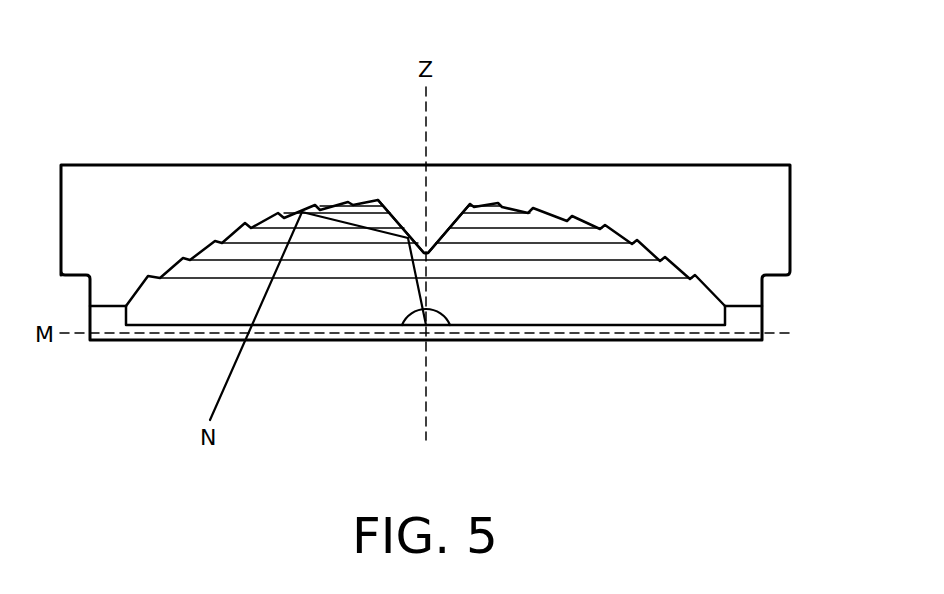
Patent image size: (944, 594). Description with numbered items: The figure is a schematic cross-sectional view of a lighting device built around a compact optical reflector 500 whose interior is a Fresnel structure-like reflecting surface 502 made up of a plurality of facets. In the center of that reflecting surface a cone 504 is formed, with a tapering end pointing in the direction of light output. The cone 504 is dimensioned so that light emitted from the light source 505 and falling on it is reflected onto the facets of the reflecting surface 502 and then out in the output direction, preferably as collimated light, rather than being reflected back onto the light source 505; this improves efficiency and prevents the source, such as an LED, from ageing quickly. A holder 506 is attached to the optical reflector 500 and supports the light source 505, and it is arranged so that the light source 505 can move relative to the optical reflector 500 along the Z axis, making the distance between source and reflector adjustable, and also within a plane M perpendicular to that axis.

The optical reflector 500 is at (721, 96).
The Fresnel structure-like reflecting surface 502 is at (229, 236).
The cone 504 is at (379, 201).
The light source 505 is at (426, 325).
The holder 506 is at (742, 318).